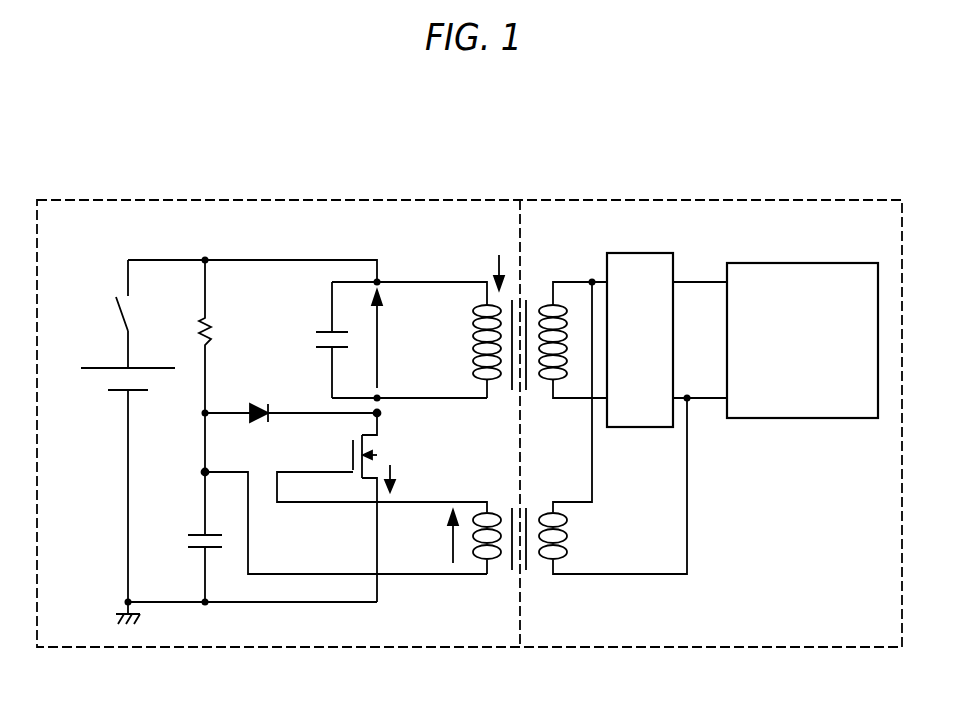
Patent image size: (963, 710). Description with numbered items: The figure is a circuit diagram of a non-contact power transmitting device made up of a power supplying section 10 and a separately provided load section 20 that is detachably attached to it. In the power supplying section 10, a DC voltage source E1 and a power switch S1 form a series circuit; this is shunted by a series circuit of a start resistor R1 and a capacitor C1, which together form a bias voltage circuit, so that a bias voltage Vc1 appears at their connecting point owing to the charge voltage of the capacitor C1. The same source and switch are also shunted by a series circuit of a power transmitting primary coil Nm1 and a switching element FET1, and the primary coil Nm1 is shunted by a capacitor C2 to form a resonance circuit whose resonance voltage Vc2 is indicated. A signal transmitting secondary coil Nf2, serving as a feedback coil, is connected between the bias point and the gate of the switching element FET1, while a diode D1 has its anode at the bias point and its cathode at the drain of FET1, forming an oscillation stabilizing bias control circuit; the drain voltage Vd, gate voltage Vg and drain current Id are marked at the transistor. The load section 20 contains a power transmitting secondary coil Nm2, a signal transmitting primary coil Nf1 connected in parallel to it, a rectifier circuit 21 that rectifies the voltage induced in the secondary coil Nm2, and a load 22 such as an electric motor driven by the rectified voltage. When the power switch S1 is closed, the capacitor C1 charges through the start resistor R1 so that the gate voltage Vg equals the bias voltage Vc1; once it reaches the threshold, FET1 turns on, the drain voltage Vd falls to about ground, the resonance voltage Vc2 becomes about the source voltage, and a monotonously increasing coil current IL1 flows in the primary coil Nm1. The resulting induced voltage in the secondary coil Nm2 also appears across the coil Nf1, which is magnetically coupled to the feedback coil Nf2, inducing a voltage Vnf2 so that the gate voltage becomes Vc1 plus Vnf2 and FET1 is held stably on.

The power supplying section 10 is at (455, 198).
The load section 20 is at (884, 198).
The rectifier circuit 21 is at (639, 253).
The load 22 is at (803, 263).
The power switch S1 is at (112, 317).
The DC voltage source E1 is at (101, 390).
The start resistor R1 is at (215, 328).
The diode D1 is at (262, 403).
The capacitor C1 is at (187, 541).
The capacitor C2 is at (319, 338).
The switching element FET1 is at (378, 452).
The bias voltage Vc1 is at (203, 472).
The resonance voltage Vc2 is at (397, 339).
The drain voltage Vd is at (384, 413).
The gate voltage Vg is at (317, 472).
The drain current Id is at (400, 478).
The coil current IL1 is at (486, 270).
The power transmitting primary coil Nm1 is at (492, 384).
The power transmitting secondary coil Nm2 is at (548, 384).
The signal transmitting primary coil Nf1 is at (548, 578).
The signal transmitting secondary coil Nf2 is at (492, 578).
The induced voltage Vnf2 is at (451, 546).